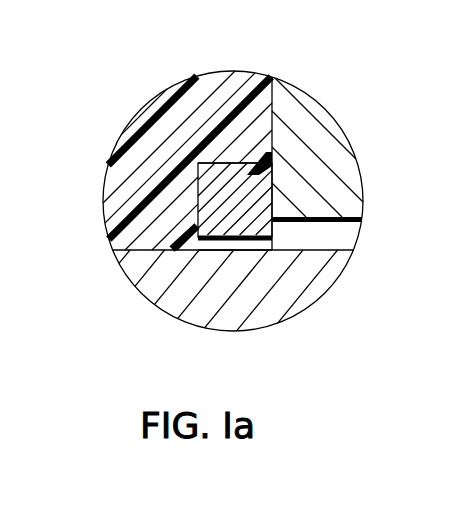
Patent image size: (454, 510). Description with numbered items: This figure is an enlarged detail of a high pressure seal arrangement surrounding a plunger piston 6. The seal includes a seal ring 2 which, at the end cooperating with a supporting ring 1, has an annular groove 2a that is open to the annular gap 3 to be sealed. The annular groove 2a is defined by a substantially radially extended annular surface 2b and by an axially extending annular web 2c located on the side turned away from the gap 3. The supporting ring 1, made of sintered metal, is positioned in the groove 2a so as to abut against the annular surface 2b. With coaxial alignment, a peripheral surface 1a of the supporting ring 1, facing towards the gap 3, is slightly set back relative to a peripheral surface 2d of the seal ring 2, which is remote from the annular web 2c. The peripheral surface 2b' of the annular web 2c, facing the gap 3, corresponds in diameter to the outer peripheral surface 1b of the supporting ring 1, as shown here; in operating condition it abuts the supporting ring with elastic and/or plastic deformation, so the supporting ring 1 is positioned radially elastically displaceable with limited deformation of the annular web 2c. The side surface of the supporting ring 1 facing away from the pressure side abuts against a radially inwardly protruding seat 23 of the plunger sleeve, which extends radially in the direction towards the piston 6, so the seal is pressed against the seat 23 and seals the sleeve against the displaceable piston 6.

The supporting ring 1 is at (237, 203).
The peripheral surface of supporting ring 1a is at (247, 240).
The outer peripheral surface of supporting ring 1b is at (215, 162).
The seal ring 2 is at (135, 188).
The annular groove 2a is at (208, 191).
The annular surface 2b is at (154, 172).
The peripheral surface of annular web 2b' is at (317, 119).
The annular web 2c is at (240, 87).
The peripheral surface of seal ring 2d is at (165, 255).
The annular gap 3 is at (220, 242).
The plunger piston 6 is at (167, 288).
The seat 23 is at (332, 188).